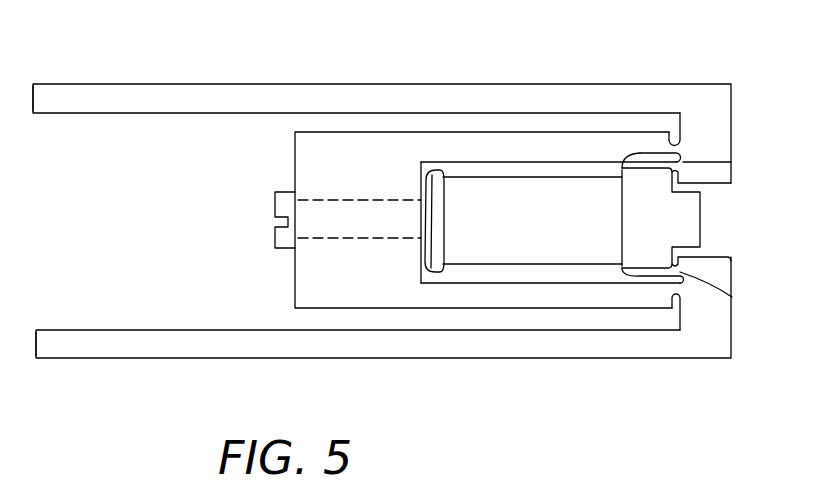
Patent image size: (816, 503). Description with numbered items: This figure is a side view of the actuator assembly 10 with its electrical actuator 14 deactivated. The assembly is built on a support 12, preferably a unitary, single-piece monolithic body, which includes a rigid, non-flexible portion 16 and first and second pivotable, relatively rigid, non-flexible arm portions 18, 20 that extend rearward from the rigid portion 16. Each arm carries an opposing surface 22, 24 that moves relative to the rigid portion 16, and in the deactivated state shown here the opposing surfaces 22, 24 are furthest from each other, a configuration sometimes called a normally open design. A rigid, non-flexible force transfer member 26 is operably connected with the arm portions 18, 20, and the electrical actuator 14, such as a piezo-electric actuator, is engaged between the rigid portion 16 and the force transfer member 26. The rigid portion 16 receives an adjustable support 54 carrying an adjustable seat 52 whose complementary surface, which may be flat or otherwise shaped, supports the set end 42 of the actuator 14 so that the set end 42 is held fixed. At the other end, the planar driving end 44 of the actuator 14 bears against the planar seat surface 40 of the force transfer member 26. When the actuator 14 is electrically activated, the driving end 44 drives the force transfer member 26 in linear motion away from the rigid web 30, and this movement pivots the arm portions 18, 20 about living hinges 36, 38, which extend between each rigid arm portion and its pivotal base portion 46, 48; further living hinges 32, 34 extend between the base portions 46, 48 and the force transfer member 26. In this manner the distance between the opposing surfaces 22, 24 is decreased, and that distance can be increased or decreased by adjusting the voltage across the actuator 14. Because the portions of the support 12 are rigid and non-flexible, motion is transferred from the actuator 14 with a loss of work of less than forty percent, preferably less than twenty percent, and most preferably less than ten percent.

The actuator assembly 10 is at (330, 31).
The support 12 is at (431, 122).
The electrical actuator 14 is at (523, 252).
The rigid, non-flexible portion 16 is at (310, 157).
The first pivotable arm portion 18 is at (153, 88).
The second pivotable arm portion 20 is at (174, 348).
The opposing surface 22 is at (77, 114).
The opposing surface 24 is at (70, 330).
The force transfer member 26 is at (702, 212).
The rigid web 30 is at (308, 294).
The living hinge 32 is at (732, 162).
The living hinge 34 is at (733, 295).
The living hinge 36 is at (684, 147).
The living hinge 38 is at (680, 292).
The planar seat surface 40 is at (606, 224).
The set end 42 is at (443, 208).
The driving end 44 is at (640, 205).
The pivotal base portion 46 is at (698, 180).
The pivotal base portion 48 is at (720, 280).
The adjustable seat 52 is at (443, 248).
The adjustable support 54 is at (275, 242).